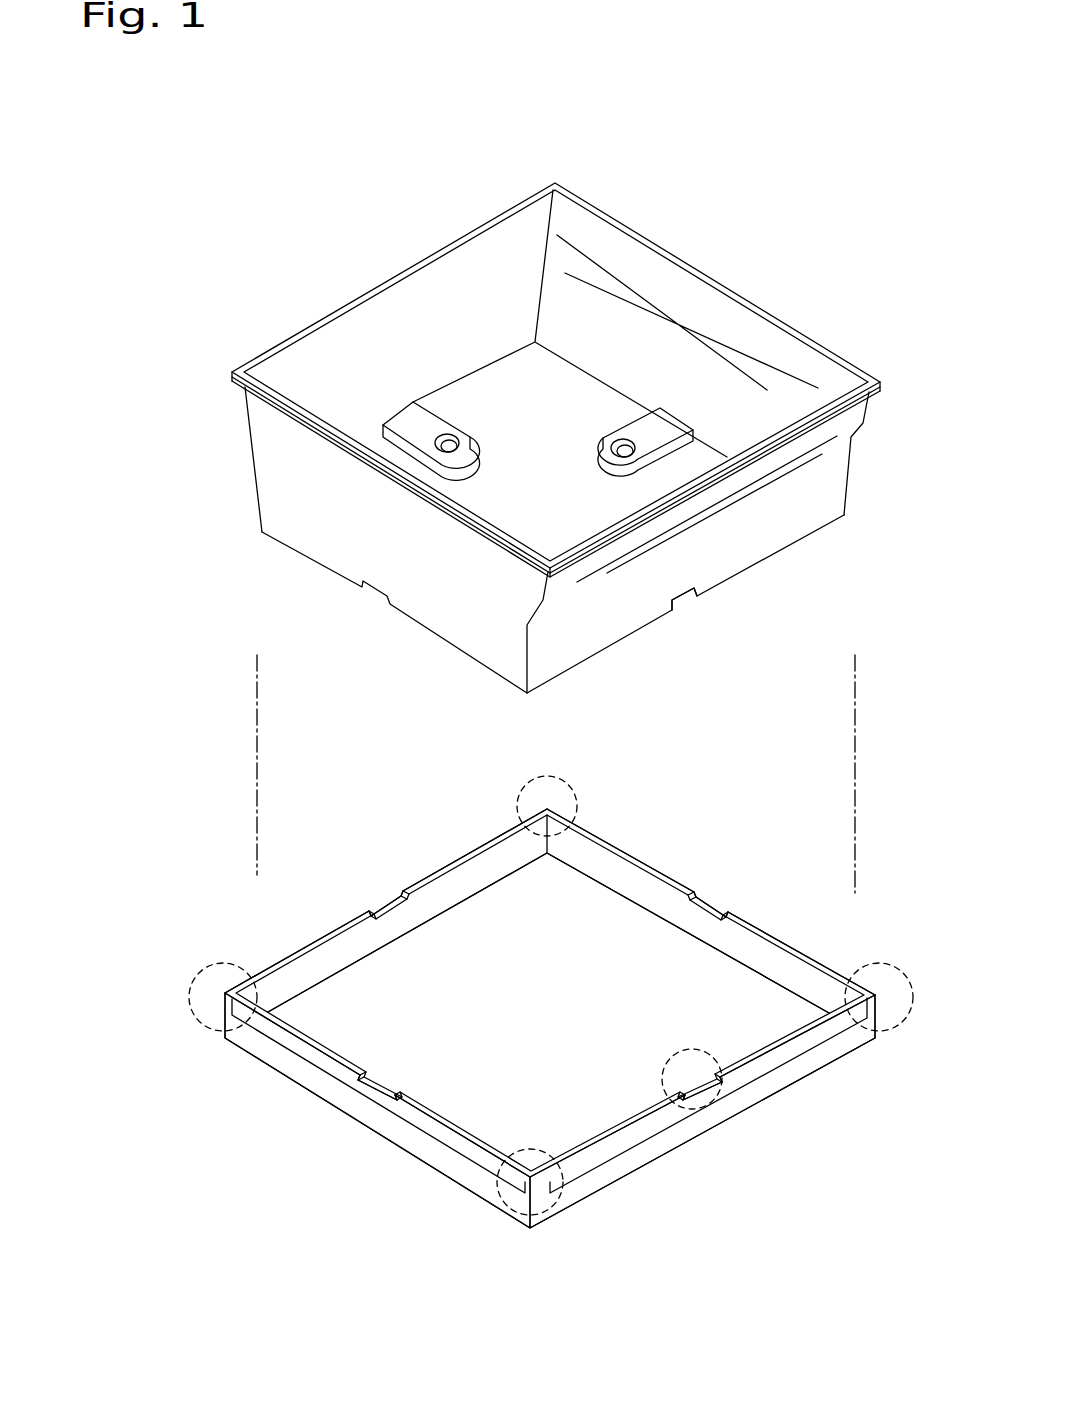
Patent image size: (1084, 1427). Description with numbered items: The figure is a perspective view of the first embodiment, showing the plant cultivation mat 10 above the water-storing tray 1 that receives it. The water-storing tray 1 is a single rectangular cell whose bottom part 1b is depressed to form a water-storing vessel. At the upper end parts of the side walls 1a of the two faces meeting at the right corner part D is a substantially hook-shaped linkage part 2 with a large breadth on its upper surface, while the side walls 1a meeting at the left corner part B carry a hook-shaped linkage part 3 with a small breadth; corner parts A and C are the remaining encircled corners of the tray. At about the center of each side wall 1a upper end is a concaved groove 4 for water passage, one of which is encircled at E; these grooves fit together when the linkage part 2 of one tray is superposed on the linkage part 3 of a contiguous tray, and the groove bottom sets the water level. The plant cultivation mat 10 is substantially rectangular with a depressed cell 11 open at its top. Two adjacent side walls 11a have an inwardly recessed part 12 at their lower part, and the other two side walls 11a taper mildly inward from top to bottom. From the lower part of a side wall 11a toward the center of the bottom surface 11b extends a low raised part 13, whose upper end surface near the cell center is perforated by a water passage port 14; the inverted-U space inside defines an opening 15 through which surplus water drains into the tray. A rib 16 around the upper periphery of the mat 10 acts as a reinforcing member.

The water-storing tray 1 is at (615, 833).
The side wall 1a is at (792, 970).
The bottom part 1b is at (400, 967).
The linkage part 2 is at (682, 877).
The linkage part 3 is at (460, 857).
The concaved groove 4 is at (708, 902).
The plant cultivation mat 10 is at (582, 188).
The cell 11 is at (503, 333).
The side wall 11a is at (388, 333).
The bottom surface 11b is at (537, 523).
The inwardly recessed part 12 is at (793, 510).
The low raised part 13 is at (427, 423).
The water passage port 14 is at (626, 445).
The opening 15 is at (688, 598).
The rib 16 is at (652, 237).
The corner part A is at (517, 1212).
The corner part B is at (218, 970).
The corner part C is at (522, 797).
The corner part D is at (912, 1000).
The concaved groove portion E is at (663, 1062).